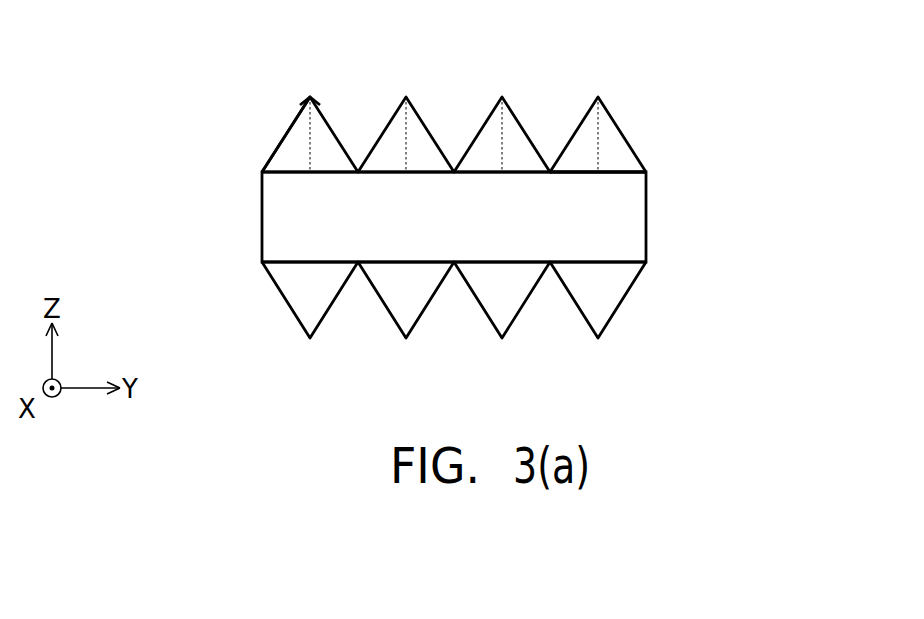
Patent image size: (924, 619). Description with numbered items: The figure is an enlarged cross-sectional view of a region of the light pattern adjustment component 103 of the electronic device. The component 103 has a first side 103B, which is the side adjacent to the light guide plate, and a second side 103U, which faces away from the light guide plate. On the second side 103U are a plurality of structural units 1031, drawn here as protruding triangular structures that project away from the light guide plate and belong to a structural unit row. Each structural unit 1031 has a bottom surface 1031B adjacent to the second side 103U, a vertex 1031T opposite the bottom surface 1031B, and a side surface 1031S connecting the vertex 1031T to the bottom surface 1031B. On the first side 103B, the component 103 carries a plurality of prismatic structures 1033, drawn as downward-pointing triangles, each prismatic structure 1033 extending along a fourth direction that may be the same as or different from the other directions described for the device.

The light pattern adjustment component 103 is at (648, 216).
The second side 103U is at (290, 171).
The first side 103B is at (290, 264).
The structural unit 1031 is at (623, 130).
The vertex 1031T is at (310, 96).
The side surface 1031S is at (292, 132).
The bottom surface 1031B is at (617, 171).
The prismatic structure 1033 is at (606, 294).